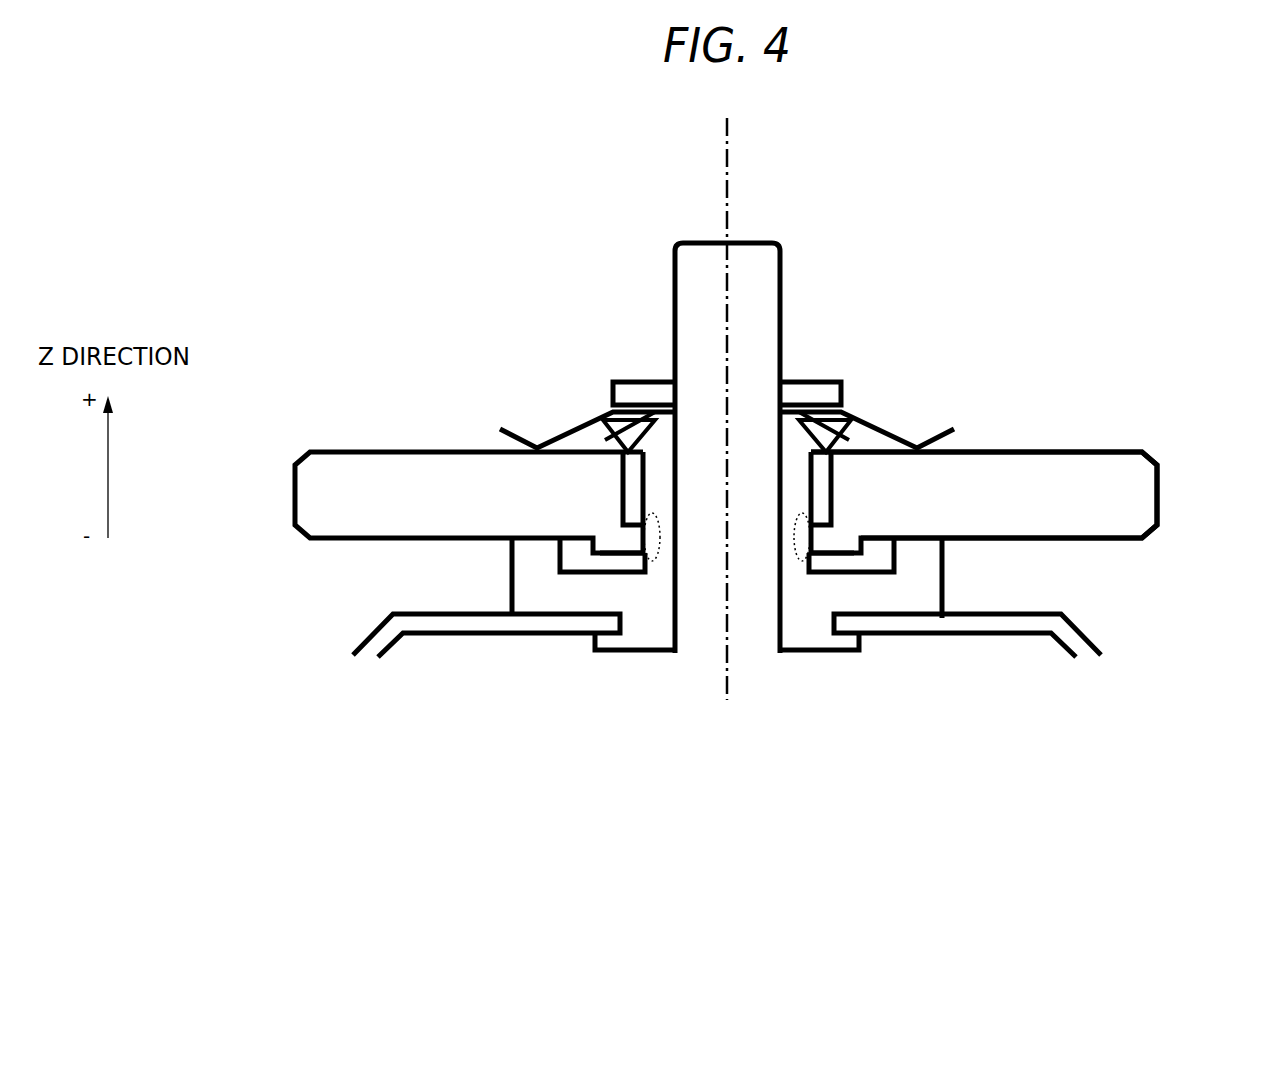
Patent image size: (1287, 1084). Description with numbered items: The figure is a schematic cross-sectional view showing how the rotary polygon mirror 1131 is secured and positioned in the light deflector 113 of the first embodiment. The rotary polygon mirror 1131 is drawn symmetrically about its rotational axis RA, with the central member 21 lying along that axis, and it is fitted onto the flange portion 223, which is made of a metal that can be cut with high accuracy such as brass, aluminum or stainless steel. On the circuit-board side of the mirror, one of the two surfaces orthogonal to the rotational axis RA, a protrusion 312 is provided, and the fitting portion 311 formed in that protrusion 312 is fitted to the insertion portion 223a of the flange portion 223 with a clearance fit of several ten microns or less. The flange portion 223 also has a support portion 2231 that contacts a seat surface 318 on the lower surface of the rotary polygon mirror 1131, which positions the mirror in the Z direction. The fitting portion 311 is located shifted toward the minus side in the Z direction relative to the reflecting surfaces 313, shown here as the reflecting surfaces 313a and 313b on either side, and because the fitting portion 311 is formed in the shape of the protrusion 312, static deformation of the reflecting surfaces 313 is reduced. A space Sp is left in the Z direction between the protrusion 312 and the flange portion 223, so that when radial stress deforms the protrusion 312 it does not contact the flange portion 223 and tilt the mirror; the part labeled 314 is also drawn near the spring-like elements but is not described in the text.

The shaft 21 is at (697, 243).
The light deflector 113 is at (1041, 178).
The fitting portion 311 is at (658, 518).
The protrusion 312 is at (615, 542).
The reflecting surfaces 313 is at (726, 516).
The first plate 313a is at (294, 512).
The second plate 313b is at (1158, 494).
The collar 314 is at (612, 405).
The seat surface 318 is at (543, 537).
The flange portion 223 is at (925, 568).
The insertion portion 223a is at (657, 553).
The support portion 2231 is at (523, 536).
The rotary polygon mirror 1131 is at (1125, 480).
The rotational axis RA is at (733, 143).
The space Sp is at (640, 556).